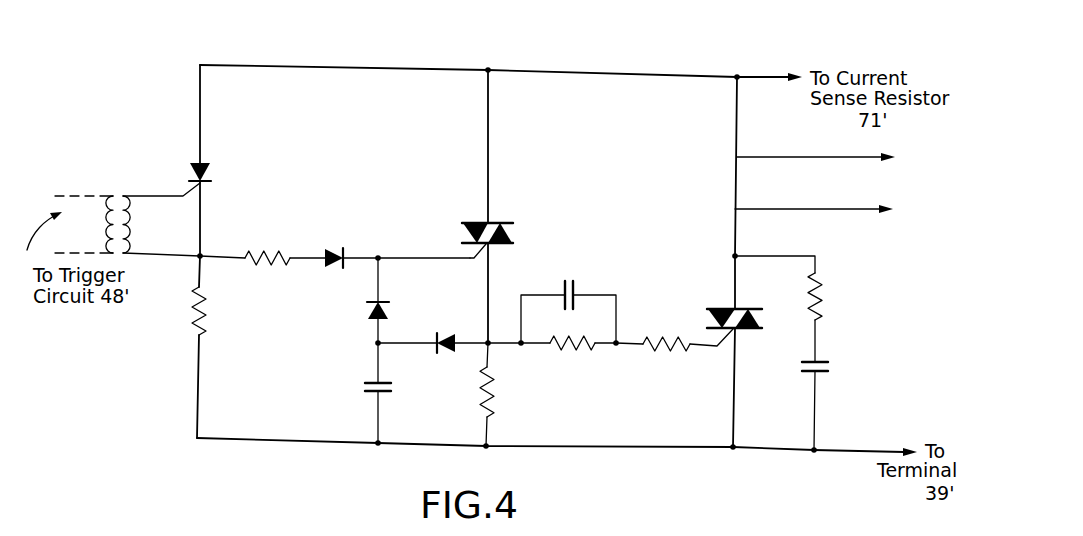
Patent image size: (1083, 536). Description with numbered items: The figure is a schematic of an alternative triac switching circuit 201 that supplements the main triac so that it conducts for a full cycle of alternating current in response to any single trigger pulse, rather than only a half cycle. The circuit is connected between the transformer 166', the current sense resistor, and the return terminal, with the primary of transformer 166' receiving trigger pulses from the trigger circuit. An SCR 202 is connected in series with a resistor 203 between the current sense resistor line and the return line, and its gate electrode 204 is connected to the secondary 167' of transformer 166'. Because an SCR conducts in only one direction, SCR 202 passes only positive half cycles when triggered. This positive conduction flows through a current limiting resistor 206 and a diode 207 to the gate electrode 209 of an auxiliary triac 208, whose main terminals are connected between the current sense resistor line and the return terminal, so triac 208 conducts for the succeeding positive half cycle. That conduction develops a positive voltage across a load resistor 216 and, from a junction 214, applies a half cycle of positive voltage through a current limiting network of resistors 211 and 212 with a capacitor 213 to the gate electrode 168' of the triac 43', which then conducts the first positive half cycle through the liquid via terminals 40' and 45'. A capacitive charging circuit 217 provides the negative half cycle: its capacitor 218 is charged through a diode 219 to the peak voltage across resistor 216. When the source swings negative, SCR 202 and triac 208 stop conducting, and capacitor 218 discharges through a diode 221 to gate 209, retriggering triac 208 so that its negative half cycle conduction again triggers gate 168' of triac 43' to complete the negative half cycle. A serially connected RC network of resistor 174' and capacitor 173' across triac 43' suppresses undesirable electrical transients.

The triac switching circuit 201 is at (236, 52).
The SCR 202 is at (207, 174).
The transformer 166' is at (150, 203).
The secondary 167' is at (159, 225).
The gate electrode 204 is at (137, 200).
The resistor 203 is at (212, 319).
The current limiting resistor 206 is at (262, 250).
The diode 207 is at (369, 212).
The diode 221 is at (372, 305).
The capacitive charging circuit 217 is at (355, 358).
The capacitor 218 is at (372, 392).
The auxiliary triac 208 is at (510, 223).
The gate electrode 209 is at (473, 256).
The diode 219 is at (452, 351).
The junction 214 is at (491, 346).
The load resistor 216 is at (490, 412).
The capacitor 213 is at (565, 281).
The resistor 211 is at (590, 347).
The resistor 212 is at (648, 348).
The gate electrode 168' is at (723, 351).
The triac 43' is at (706, 191).
The terminal 40' is at (836, 155).
The terminal 45' is at (832, 210).
The resistor 174' is at (815, 309).
The capacitor 173' is at (849, 407).